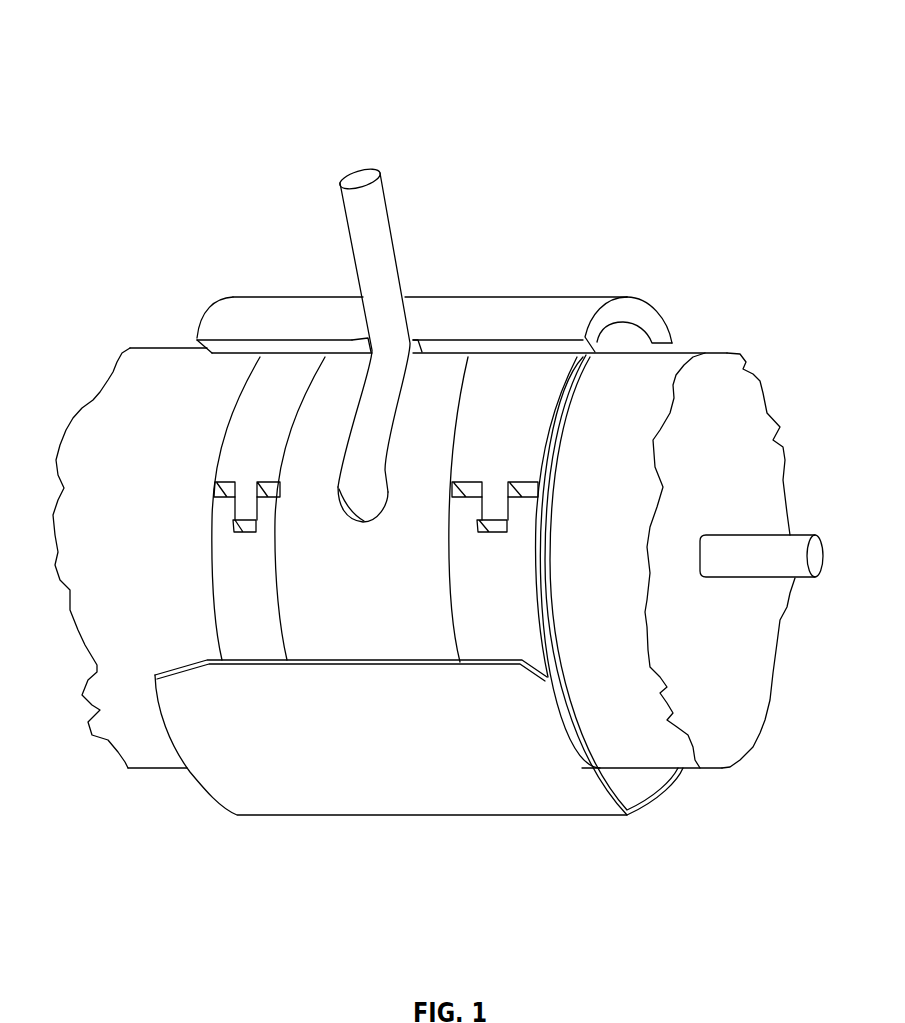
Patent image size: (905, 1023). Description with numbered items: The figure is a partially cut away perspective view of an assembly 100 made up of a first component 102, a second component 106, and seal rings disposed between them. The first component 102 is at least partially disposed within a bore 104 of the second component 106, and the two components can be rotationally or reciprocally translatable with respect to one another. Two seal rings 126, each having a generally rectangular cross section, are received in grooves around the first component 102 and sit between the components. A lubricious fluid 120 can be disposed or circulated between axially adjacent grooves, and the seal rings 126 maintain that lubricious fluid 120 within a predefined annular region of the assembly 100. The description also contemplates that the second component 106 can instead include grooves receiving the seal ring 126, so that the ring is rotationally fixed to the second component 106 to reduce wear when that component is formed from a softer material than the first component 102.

The assembly 100 is at (659, 55).
The first component 102 is at (660, 749).
The bore 104 is at (581, 388).
The second component 106 is at (395, 790).
The lubricious fluid 120 is at (388, 210).
The seal ring 126 is at (256, 600).